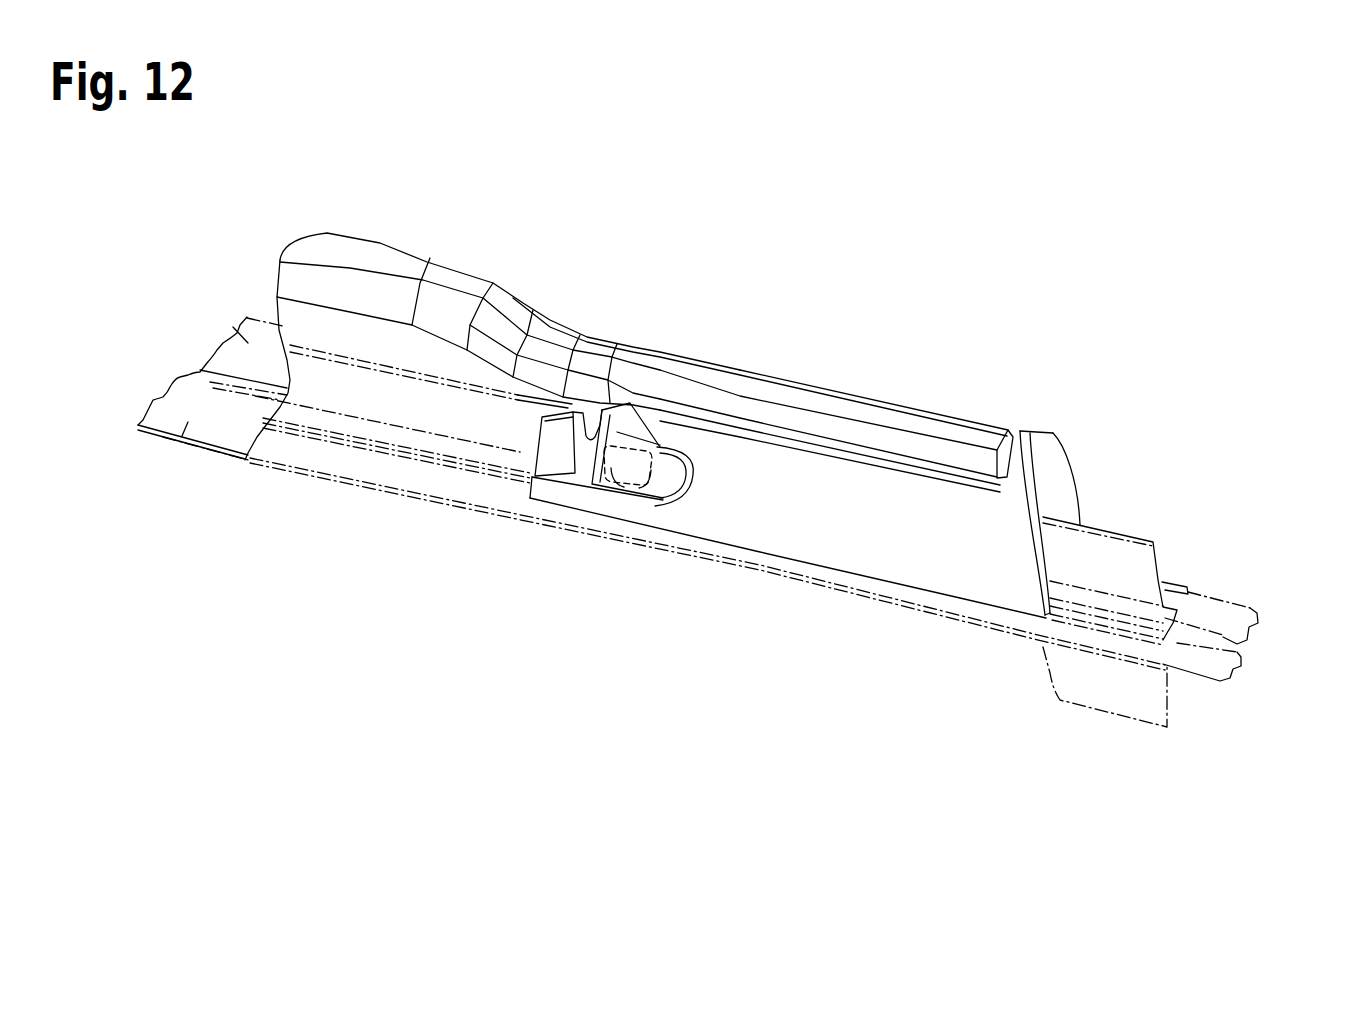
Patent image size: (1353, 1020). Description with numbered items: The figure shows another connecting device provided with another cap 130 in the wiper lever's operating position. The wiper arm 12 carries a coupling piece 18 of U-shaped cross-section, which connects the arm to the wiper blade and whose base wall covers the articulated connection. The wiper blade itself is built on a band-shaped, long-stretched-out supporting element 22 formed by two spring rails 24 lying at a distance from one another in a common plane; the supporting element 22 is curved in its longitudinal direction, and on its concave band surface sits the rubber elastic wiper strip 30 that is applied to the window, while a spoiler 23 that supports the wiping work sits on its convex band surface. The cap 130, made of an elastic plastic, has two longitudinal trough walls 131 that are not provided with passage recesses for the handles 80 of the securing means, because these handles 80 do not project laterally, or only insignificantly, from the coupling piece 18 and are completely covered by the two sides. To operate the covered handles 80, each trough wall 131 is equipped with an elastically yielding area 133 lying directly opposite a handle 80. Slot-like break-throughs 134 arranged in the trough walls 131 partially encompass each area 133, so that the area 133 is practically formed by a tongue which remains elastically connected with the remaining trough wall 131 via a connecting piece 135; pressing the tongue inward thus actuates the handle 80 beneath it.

The wiper arm 12 is at (403, 228).
The coupling piece 18 is at (909, 380).
The supporting element 22 is at (1265, 661).
The spoiler 23 is at (364, 398).
The spring rails 24 is at (233, 327).
The wiper strip 30 is at (1107, 700).
The handles 80 is at (603, 497).
The cap 130 is at (1072, 432).
The longitudinal trough walls 131 is at (887, 540).
The elastically yielding area 133 is at (663, 505).
The slot-like break-throughs 134 is at (681, 407).
The connecting piece 135 is at (693, 482).